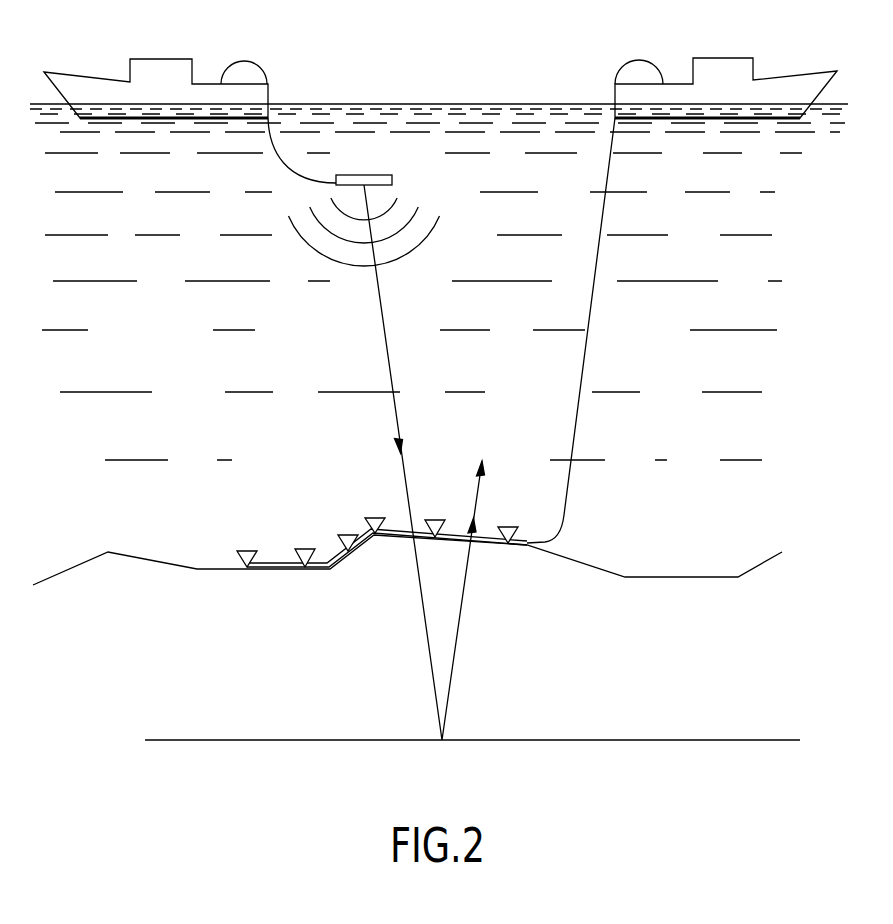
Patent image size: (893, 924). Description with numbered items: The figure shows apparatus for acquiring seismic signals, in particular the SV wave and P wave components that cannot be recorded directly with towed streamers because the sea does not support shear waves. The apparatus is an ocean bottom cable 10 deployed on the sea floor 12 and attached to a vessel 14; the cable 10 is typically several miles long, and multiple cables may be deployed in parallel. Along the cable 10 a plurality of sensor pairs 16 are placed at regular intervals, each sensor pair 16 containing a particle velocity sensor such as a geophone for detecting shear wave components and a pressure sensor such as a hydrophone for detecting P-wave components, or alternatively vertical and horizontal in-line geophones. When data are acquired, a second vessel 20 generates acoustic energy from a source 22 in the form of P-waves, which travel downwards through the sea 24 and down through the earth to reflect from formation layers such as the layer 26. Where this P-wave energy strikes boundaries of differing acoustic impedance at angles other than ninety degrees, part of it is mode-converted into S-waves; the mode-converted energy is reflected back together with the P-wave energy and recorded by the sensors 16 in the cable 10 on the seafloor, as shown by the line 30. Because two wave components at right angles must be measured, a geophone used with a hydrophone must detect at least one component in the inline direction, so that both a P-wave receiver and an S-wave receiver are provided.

The ocean bottom cable 10 is at (530, 548).
The sea floor 12 is at (724, 576).
The vessel 14 is at (725, 57).
The sensor pairs 16 is at (348, 535).
The vessel 20 is at (162, 57).
The source 22 is at (360, 175).
The sea 24 is at (177, 328).
The layer 26 is at (302, 738).
The line 30 is at (388, 357).